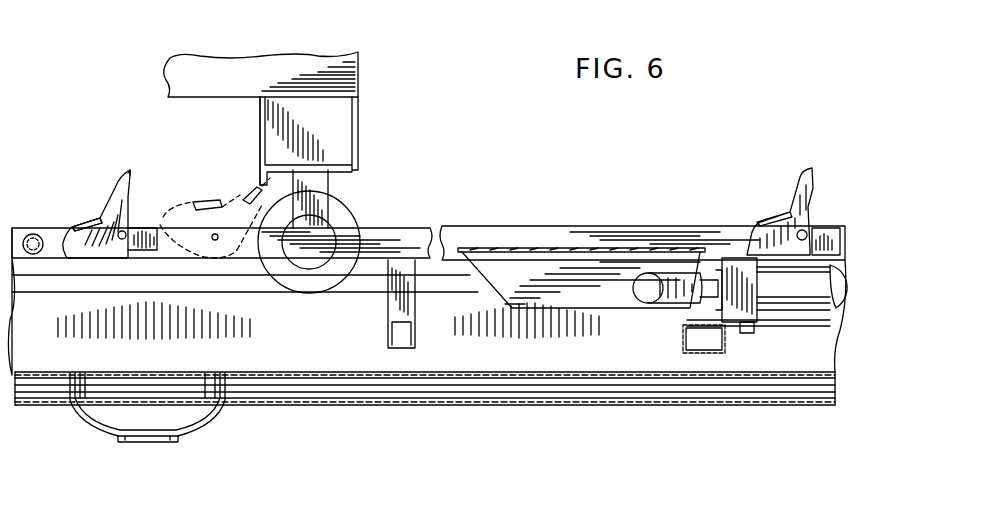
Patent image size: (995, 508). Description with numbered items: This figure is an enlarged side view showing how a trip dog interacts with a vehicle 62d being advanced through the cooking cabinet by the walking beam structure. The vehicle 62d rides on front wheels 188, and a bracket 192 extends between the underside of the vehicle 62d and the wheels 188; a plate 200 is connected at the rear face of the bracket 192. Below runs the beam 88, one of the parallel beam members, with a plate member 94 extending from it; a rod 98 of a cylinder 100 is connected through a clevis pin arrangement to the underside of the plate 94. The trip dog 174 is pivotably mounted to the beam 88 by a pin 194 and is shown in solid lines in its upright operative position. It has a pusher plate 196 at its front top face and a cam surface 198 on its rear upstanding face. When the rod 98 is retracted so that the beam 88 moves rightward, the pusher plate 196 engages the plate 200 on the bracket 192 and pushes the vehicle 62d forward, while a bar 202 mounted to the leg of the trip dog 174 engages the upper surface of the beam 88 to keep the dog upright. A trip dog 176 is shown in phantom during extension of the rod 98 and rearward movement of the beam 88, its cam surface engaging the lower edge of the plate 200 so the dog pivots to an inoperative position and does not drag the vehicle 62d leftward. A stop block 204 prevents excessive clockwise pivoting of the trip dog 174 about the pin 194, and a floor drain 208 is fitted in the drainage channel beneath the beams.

The vehicle 62d is at (279, 55).
The bracket member 192 is at (360, 135).
The plate 200 is at (261, 132).
The front wheels 188 is at (355, 208).
The beam member 88 is at (410, 226).
The plate member 94 is at (562, 247).
The rod 98 is at (722, 262).
The cylinder 100 is at (794, 331).
The trip dog 176 is at (774, 190).
The cam surface 198 is at (113, 200).
The bar 202 is at (72, 222).
The pusher plate 196 is at (130, 175).
The pin 194 is at (123, 231).
The trip dog 174 is at (87, 190).
The stop block 204 is at (158, 246).
The floor drain 208 is at (206, 425).